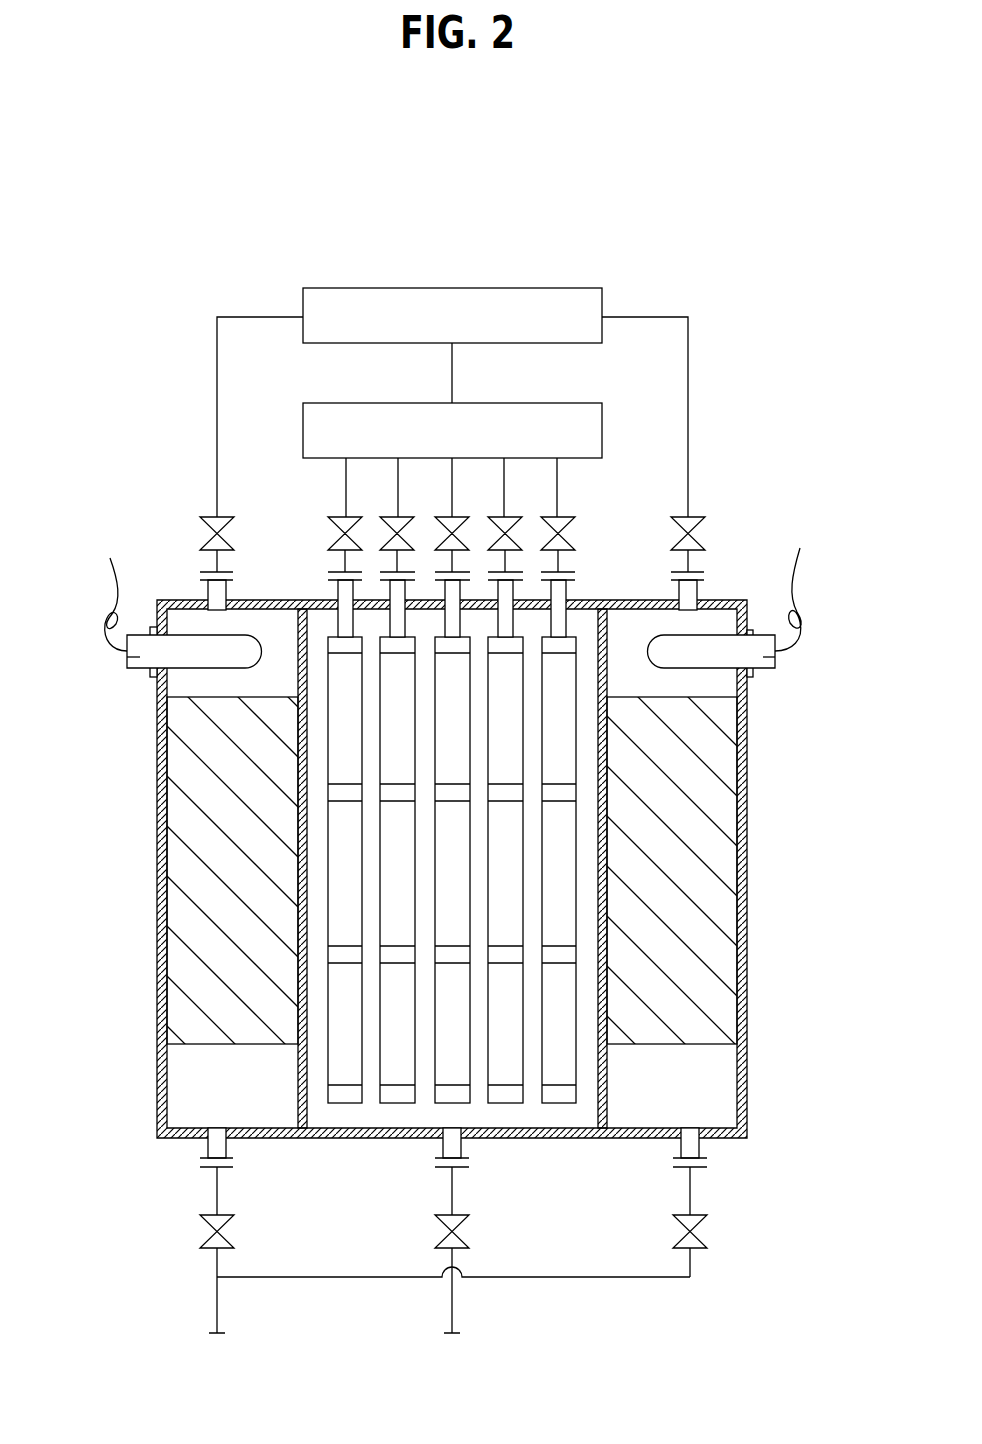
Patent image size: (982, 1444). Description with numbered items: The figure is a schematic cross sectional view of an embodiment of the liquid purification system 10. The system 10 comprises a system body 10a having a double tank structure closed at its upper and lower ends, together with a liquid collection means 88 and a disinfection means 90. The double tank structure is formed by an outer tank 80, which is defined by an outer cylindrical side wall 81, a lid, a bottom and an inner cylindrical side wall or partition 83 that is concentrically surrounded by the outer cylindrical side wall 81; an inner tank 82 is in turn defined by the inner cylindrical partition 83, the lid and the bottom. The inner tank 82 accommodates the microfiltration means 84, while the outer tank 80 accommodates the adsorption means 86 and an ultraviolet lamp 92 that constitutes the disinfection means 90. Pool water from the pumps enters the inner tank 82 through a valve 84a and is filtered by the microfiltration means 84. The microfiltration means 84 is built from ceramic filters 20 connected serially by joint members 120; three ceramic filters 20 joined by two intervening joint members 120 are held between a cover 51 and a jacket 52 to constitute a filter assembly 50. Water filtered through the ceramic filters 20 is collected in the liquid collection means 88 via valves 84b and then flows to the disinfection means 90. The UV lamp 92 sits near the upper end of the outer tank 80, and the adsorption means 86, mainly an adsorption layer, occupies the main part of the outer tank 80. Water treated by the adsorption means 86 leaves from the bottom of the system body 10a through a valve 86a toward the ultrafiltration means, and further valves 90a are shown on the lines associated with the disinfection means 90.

The liquid purification system 10 is at (766, 335).
The system body 10a is at (296, 579).
The ceramic filter 20 is at (565, 1073).
The filter assembly 50 is at (582, 886).
The cover 51 is at (552, 1100).
The jacket 52 is at (567, 645).
The outer tank 80 is at (706, 1118).
The outer cylindrical side wall 81 is at (746, 750).
The inner tank 82 is at (473, 1118).
The inner cylindrical side wall or partition 83 is at (298, 1093).
The microfiltration means 84 is at (360, 1114).
The valve 84a is at (469, 1238).
The valve 84b is at (570, 548).
The adsorption means 86 is at (725, 840).
The valve 86a is at (234, 1238).
The liquid collection means 88 is at (474, 450).
The disinfection means 90 is at (474, 334).
The supply valve 90a is at (205, 545).
The ultraviolet lamp 92 is at (137, 674).
The joint member 120 is at (565, 957).